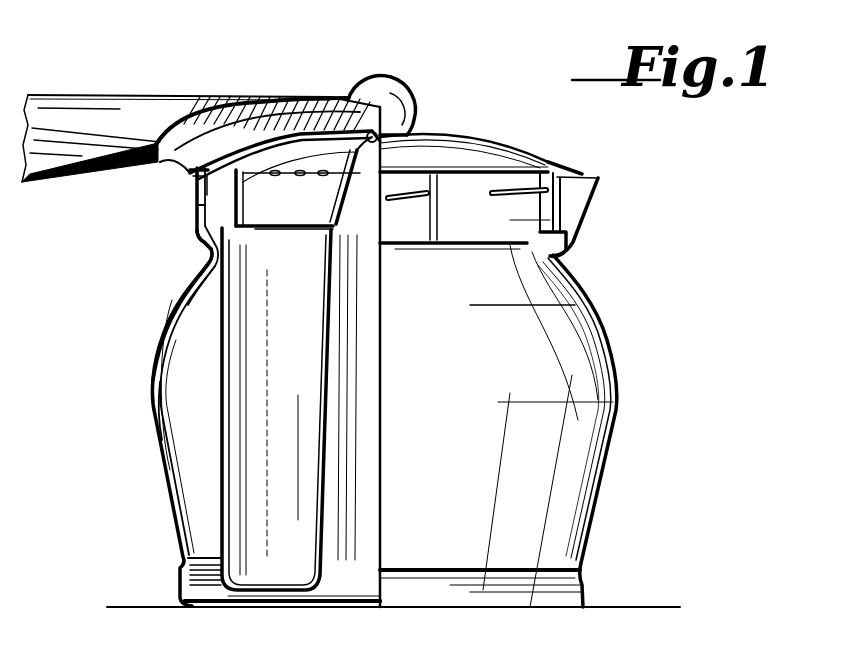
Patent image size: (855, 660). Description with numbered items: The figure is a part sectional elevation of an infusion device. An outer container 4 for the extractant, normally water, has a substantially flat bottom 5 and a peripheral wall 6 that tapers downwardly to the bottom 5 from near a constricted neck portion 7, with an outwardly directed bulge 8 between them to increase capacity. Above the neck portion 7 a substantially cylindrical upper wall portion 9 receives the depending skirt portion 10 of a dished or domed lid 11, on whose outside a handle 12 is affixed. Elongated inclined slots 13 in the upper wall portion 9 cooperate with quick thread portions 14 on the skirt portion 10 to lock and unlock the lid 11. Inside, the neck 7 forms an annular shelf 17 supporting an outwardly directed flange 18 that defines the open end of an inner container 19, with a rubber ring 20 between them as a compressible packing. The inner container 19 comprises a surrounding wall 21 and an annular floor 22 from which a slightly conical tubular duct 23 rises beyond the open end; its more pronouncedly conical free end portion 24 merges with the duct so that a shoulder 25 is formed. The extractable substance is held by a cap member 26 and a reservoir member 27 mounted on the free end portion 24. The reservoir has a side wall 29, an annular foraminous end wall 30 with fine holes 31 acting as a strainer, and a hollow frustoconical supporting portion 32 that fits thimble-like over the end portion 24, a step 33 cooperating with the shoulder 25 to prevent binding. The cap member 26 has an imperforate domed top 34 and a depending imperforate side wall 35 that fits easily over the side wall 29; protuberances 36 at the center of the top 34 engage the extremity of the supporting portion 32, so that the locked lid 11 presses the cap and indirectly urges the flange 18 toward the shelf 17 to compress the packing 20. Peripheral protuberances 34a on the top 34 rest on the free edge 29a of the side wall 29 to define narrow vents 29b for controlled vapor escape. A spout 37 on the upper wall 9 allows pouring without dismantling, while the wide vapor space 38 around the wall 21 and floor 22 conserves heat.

The outer container 4 is at (610, 458).
The bottom 5 is at (495, 607).
The peripheral wall 6 is at (213, 335).
The constricted neck portion 7 is at (214, 255).
The outwardly directed bulge 8 is at (175, 305).
The upper wall portion 9 is at (198, 234).
The skirt portion 10 is at (197, 218).
The lid 11 is at (503, 138).
The handle 12 is at (310, 98).
The inclined slots 13 is at (197, 200).
The quick thread portions 14 is at (196, 173).
The annular shelf 17 is at (215, 272).
The outwardly directed flange 18 is at (200, 248).
The inner container 19 is at (222, 520).
The rubber ring 20 is at (208, 250).
The surrounding wall 21 is at (222, 420).
The annular floor 22 is at (265, 607).
The tubular duct 23 is at (315, 457).
The free end portion 24 is at (395, 145).
The shoulder 25 is at (402, 170).
The cap member 26 is at (232, 190).
The reservoir member 27 is at (205, 318).
The side wall 29 is at (263, 160).
The free edge 29a is at (253, 153).
The vents 29b is at (276, 157).
The foraminous end wall 30 is at (218, 360).
The fine holes 31 is at (304, 229).
The supporting portion 32 is at (350, 100).
The step 33 is at (412, 195).
The top 34 is at (300, 167).
The protuberances 34a is at (312, 150).
The depending side wall 35 is at (200, 163).
The protuberances 36 is at (378, 172).
The spout 37 is at (592, 200).
The vapor space 38 is at (180, 407).